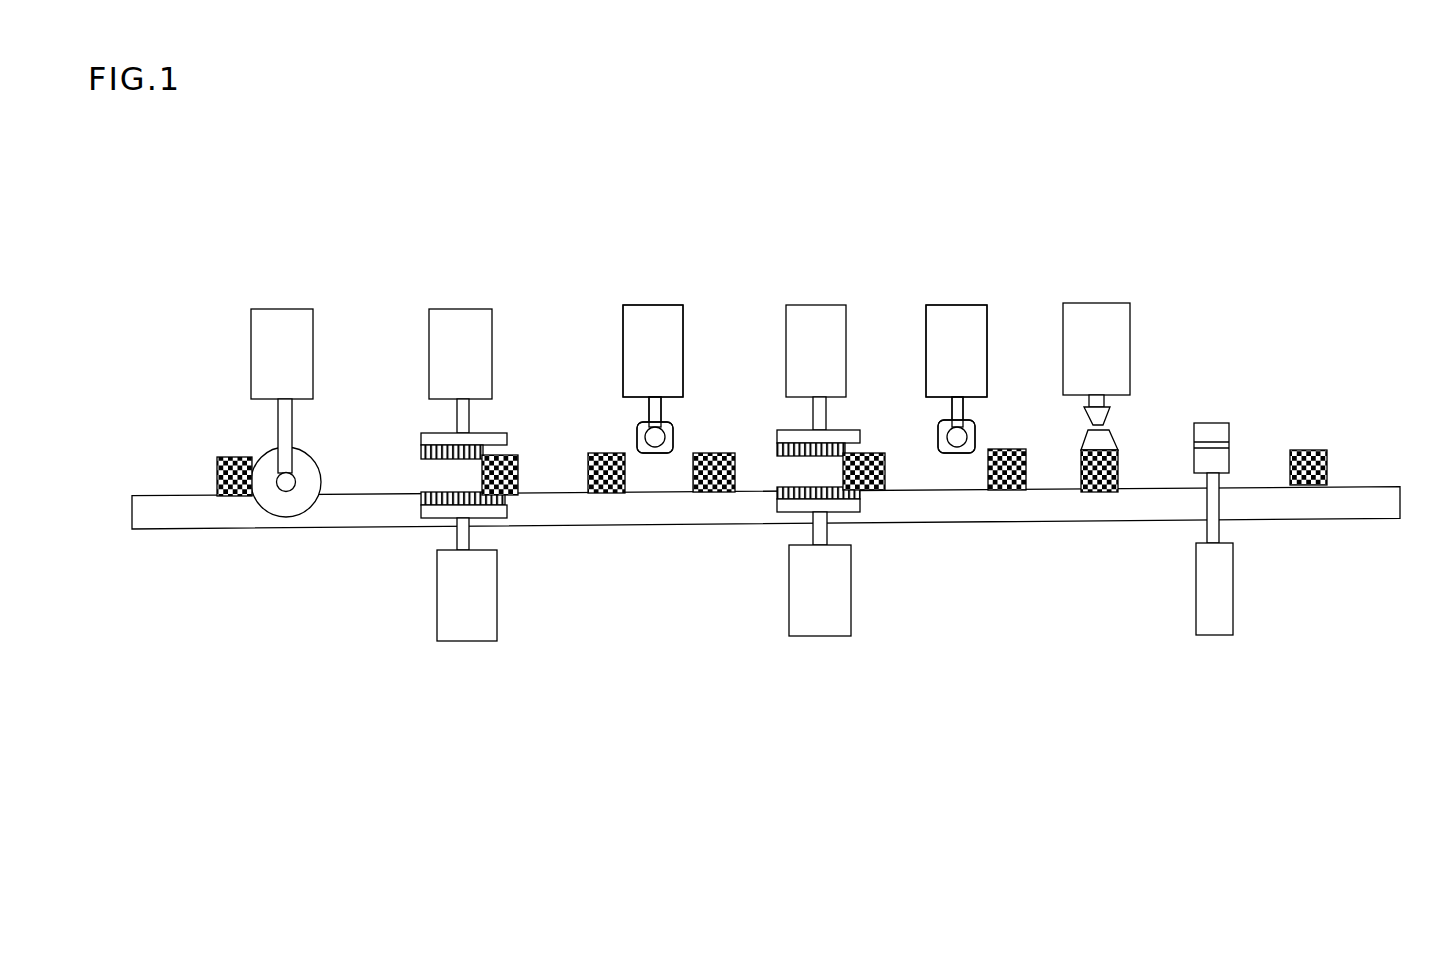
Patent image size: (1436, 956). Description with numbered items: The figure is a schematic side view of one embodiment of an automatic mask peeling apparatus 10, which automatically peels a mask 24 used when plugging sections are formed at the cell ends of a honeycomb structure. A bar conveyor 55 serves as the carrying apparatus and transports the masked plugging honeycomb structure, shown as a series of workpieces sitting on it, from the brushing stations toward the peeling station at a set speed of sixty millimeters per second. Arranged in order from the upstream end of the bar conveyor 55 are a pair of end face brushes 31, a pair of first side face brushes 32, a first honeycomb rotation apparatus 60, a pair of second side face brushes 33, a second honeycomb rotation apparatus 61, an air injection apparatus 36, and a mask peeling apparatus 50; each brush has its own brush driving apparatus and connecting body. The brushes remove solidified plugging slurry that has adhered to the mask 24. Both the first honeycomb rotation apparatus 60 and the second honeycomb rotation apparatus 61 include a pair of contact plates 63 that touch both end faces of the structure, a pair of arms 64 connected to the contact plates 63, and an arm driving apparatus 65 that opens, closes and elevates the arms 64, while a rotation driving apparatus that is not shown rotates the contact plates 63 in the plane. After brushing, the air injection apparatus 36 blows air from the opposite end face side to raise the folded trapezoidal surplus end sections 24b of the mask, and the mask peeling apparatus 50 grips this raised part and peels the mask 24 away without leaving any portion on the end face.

The automatic mask peeling apparatus 10 is at (208, 187).
The mask 24 is at (231, 455).
The end sections in the longitudinal direction of the mask 24b is at (1077, 435).
The end face brush 31 is at (280, 503).
The first side face brush 32 is at (430, 507).
The second side face brush 33 is at (777, 512).
The air injection apparatus 36 is at (1110, 293).
The mask peeling apparatus 50 is at (1233, 407).
The bar conveyor 55 is at (607, 515).
The first honeycomb rotation apparatus 60 is at (655, 297).
The second honeycomb rotation apparatus 61 is at (961, 296).
The contact plate 63 is at (640, 430).
The arm 64 is at (660, 413).
The arm driving apparatus 65 is at (633, 337).